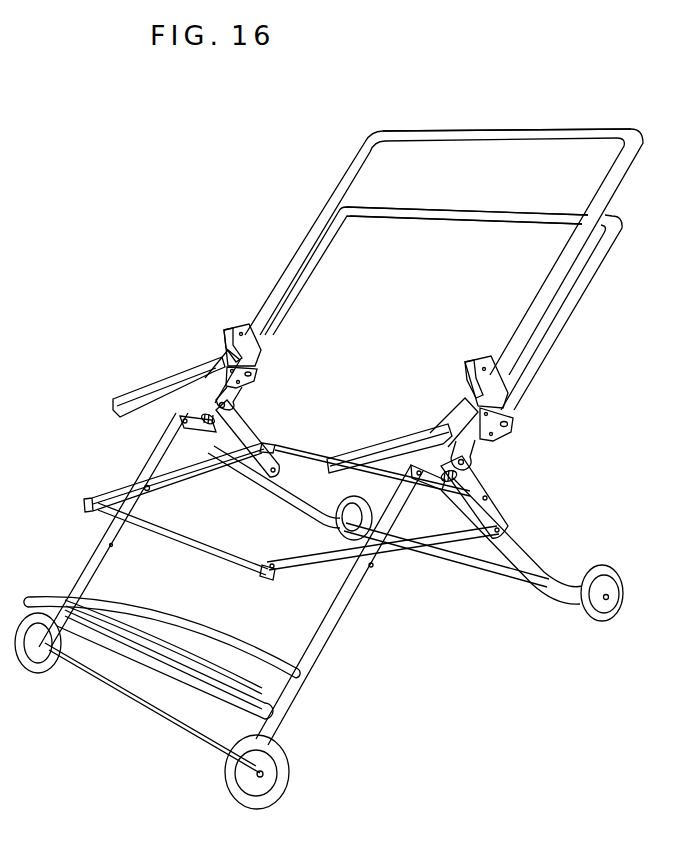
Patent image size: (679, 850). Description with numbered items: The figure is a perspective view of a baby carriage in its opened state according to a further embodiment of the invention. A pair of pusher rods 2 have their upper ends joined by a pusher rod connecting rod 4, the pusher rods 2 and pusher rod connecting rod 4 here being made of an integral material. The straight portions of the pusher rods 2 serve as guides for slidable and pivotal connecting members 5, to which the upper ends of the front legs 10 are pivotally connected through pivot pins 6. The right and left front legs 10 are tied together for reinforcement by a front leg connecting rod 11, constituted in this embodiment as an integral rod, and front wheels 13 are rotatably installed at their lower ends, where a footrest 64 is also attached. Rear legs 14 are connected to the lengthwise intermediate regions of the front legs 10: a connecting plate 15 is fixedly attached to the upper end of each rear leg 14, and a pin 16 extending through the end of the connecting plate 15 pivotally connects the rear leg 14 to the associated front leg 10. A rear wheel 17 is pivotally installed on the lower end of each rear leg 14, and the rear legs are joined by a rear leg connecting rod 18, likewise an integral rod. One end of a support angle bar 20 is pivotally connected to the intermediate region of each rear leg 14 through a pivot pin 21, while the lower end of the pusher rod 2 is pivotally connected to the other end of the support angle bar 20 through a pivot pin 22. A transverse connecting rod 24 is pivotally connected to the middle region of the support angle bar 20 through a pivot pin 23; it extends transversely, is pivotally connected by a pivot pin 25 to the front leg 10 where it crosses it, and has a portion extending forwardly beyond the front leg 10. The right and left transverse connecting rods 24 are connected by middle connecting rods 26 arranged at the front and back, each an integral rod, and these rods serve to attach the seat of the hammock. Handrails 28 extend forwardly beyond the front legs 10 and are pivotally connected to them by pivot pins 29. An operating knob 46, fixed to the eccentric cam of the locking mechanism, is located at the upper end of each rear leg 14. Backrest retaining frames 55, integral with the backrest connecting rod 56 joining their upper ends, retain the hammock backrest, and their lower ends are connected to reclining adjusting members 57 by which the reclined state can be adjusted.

The pusher rods 2 is at (301, 247).
The pusher rod connecting rod 4 is at (506, 129).
The slidable and pivotal connecting members 5 is at (229, 328).
The pivot pins 6 is at (243, 327).
The front legs 10 is at (104, 557).
The front leg connecting rod 11 is at (130, 702).
The front wheels 13 is at (43, 673).
The rear legs 14 is at (524, 557).
The connecting plate 15 is at (206, 421).
The pin 16 is at (160, 431).
The rear wheels 17 is at (337, 530).
The rear leg connecting rod 18 is at (456, 566).
The support angle bar 20 is at (242, 432).
The pivot pin 21 is at (272, 474).
The pivot pin 22 is at (228, 406).
The pivot pin 23 is at (490, 499).
The transverse connecting rod 24 is at (180, 469).
The pivot pin 25 is at (150, 491).
The middle connecting rod 26 is at (298, 458).
The handrails 28 is at (128, 402).
The pivot pins 29 is at (206, 384).
The operating knob 46 is at (457, 478).
The backrest retaining frames 55 is at (303, 290).
The backrest connecting rod 56 is at (467, 208).
The reclining adjusting members 57 is at (256, 377).
The footrest 64 is at (115, 663).